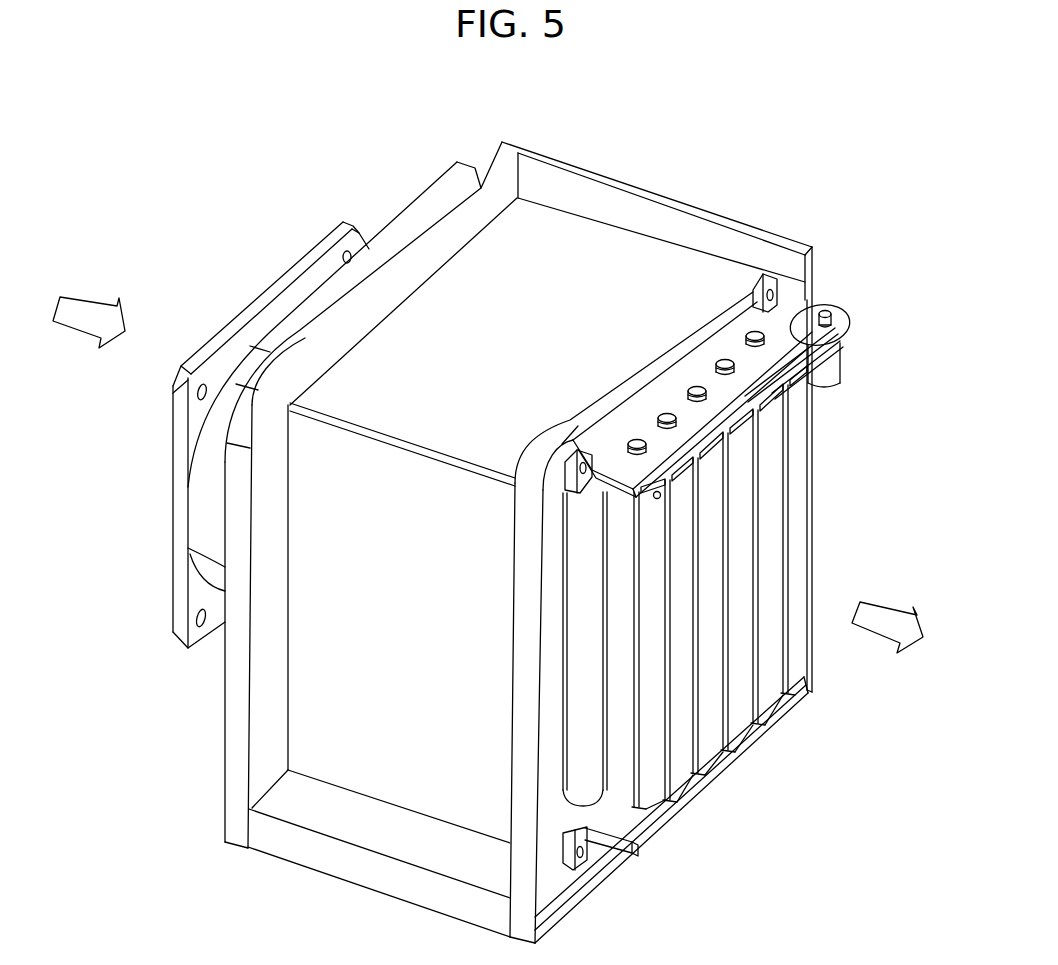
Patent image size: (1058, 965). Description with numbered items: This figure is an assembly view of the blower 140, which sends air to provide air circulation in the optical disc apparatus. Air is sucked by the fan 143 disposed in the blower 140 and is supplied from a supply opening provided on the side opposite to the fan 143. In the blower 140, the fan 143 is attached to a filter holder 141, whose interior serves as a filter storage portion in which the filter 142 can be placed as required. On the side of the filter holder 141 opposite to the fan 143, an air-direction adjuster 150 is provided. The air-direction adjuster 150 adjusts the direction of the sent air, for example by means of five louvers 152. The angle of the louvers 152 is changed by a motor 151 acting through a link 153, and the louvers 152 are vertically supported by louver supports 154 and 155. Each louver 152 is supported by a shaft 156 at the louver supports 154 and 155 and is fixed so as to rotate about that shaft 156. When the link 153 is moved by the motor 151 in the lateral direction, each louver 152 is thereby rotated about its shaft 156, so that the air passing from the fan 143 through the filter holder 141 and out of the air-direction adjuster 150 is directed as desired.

The blower 140 is at (482, 509).
The filter holder 141 is at (657, 221).
The filter 142 is at (211, 597).
The fan 143 is at (271, 427).
The air-direction adjuster 150 is at (725, 579).
The motor 151 is at (851, 321).
The louver 152 is at (766, 587).
The link 153 is at (822, 386).
The louver support 154 is at (826, 407).
The louver support 155 is at (671, 810).
The shaft 156 is at (760, 338).